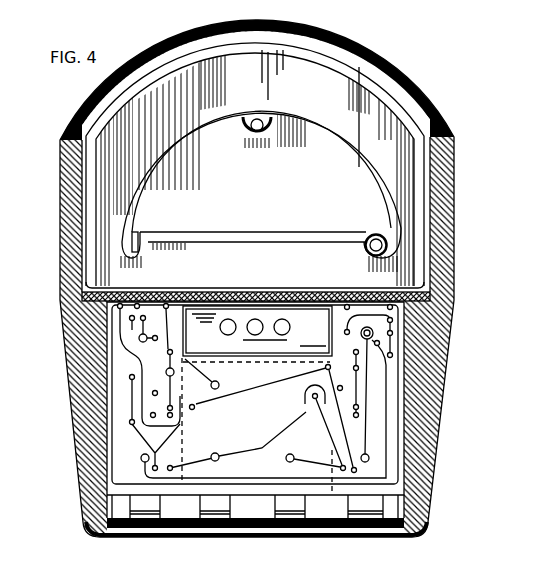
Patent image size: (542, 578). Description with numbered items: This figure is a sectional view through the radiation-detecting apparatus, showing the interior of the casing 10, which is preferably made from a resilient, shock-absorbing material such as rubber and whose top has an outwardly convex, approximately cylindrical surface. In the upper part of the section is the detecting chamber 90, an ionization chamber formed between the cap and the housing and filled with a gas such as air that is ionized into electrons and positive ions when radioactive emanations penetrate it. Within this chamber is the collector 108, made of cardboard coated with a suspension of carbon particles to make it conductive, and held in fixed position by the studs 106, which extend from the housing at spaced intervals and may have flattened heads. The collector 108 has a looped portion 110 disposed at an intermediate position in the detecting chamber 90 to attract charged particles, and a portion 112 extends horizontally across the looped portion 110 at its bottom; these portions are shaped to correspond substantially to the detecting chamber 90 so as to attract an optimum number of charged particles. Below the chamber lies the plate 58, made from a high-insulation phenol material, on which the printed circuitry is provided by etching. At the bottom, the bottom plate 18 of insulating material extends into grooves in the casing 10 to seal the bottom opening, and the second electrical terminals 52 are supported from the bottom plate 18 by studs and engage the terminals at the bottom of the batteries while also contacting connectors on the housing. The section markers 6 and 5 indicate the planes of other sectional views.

The casing 10 is at (458, 205).
The detecting chamber 90 is at (360, 62).
The studs 106 is at (255, 117).
The collector 108 is at (306, 113).
The looped portion 110 is at (160, 172).
The portion 112 is at (303, 232).
The plate 58 is at (192, 486).
The second electrical terminals 52 is at (348, 512).
The bottom plate 18 is at (266, 529).
The section line 6- 6 is at (110, 247).
The section line 5- 5 is at (107, 308).